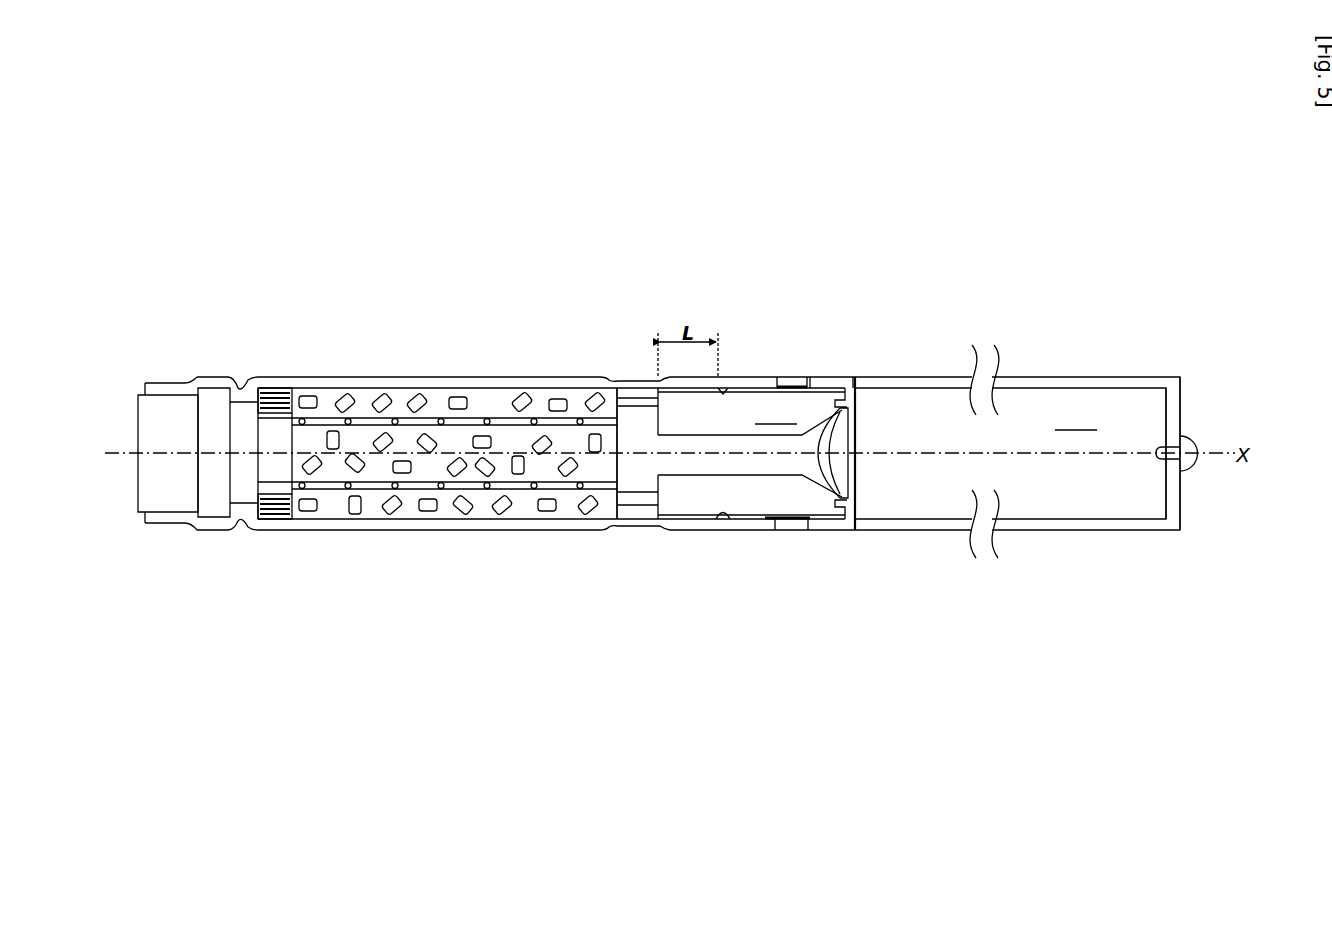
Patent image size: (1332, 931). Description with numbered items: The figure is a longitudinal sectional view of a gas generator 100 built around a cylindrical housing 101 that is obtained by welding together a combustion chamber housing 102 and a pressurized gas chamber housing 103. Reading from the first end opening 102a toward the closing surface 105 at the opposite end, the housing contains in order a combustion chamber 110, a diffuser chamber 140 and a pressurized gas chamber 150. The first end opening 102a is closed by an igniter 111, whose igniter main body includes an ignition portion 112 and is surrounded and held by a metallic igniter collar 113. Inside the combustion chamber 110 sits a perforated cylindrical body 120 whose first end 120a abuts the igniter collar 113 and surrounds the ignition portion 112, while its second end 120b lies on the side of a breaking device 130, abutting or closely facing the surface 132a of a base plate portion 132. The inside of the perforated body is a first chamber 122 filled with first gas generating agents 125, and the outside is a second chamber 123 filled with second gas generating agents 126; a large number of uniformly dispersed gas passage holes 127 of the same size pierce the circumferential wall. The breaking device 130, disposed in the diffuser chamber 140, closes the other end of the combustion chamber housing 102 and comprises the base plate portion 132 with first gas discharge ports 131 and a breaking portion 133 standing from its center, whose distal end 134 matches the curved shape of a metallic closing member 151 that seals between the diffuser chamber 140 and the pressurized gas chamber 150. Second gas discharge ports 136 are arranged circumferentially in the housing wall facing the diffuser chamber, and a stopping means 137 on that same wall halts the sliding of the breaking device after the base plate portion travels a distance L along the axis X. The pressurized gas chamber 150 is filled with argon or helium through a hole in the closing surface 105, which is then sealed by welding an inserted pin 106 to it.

The gas generator 100 is at (585, 373).
The cylindrical housing 101 is at (762, 285).
The combustion chamber housing 102 is at (765, 375).
The first end opening 102a is at (147, 392).
The pressurized gas chamber housing 103 is at (913, 377).
The closing surface 105 is at (1183, 407).
The pin 106 is at (1191, 471).
The combustion chamber 110 is at (485, 405).
The igniter 111 is at (156, 589).
The ignition portion 112 is at (272, 465).
The igniter collar 113 is at (207, 463).
The perforated cylindrical body 120 is at (363, 405).
The first end 120a is at (257, 420).
The second end 120b is at (622, 520).
The first chamber 122 is at (385, 470).
The second chamber 123 is at (482, 478).
The first gas generating agents 125 is at (443, 490).
The second gas generating agents 126 is at (548, 512).
The gas passage holes 127 is at (535, 420).
The breaking device 130 is at (738, 477).
The first gas discharge ports 131 is at (657, 500).
The base plate portion 132 is at (643, 513).
The surface of base plate portion 132a is at (614, 378).
The breaking portion 133 is at (780, 478).
The distal end 134 is at (848, 492).
The second gas discharge ports 136 is at (795, 377).
The stopping means 137 is at (720, 391).
The diffuser chamber 140 is at (751, 413).
The pressurized gas chamber 150 is at (976, 453).
The closing member 151 is at (846, 428).